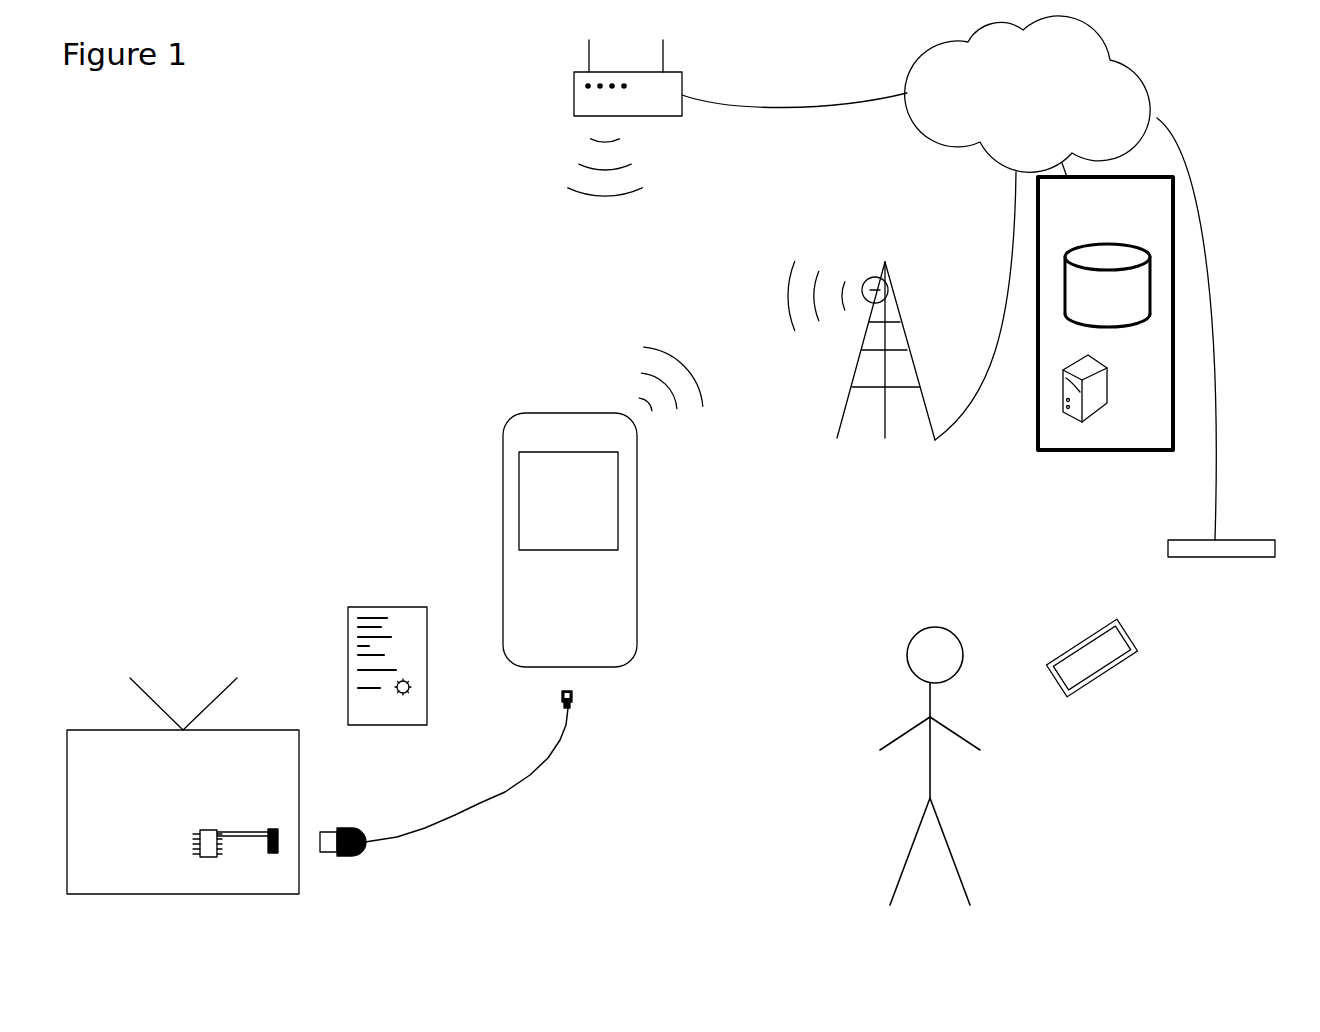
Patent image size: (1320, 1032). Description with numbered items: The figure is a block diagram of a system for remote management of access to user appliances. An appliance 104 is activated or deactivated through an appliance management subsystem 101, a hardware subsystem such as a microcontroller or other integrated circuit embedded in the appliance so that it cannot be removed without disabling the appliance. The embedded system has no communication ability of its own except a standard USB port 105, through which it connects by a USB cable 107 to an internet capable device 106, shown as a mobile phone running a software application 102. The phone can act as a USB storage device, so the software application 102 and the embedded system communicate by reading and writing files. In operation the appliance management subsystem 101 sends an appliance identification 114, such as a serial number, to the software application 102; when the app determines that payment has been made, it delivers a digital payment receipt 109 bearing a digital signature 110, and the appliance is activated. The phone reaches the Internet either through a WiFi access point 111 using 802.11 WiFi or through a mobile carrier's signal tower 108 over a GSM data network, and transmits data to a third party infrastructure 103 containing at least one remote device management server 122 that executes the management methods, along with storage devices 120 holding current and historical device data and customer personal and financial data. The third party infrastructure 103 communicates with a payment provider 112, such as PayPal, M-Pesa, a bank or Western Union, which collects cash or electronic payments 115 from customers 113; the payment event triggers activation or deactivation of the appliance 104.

The appliance management subsystem 101 is at (208, 857).
The software application 102 is at (568, 513).
The third party infrastructure 103 is at (1105, 313).
The appliance 104 is at (183, 800).
The USB port 105 is at (253, 857).
The internet capable device 106 is at (603, 521).
The USB cable 107 is at (446, 774).
The signal tower 108 is at (902, 322).
The digital payment receipt 109 is at (387, 679).
The digital signature 110 is at (396, 698).
The WiFi access point 111 is at (625, 118).
The payment provider 112 is at (1216, 354).
The customer 113 is at (930, 782).
The appliance identification 114 is at (215, 771).
The payment 115 is at (1094, 662).
The storage device 120 is at (1107, 285).
The remote device management server 122 is at (1105, 391).